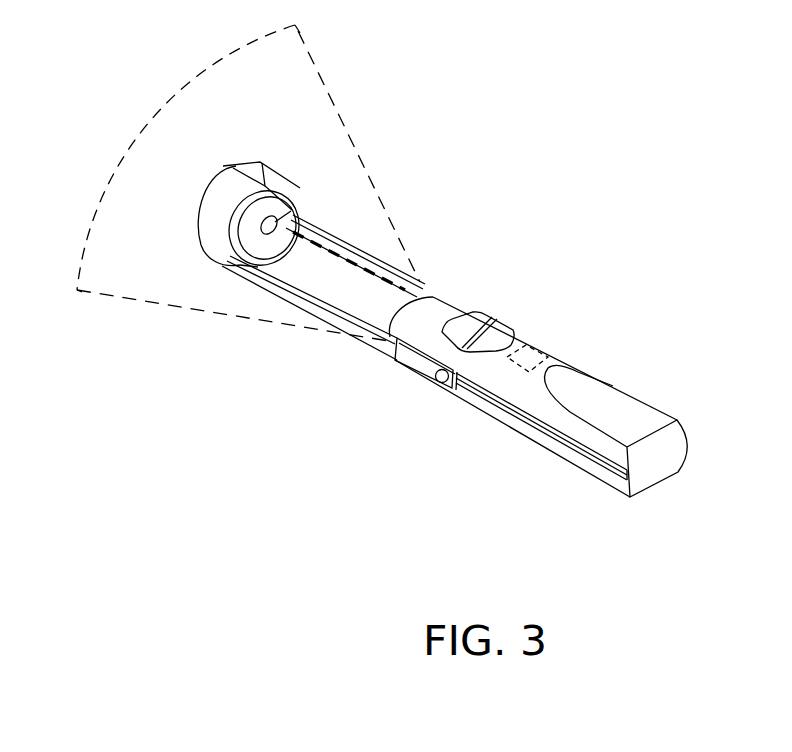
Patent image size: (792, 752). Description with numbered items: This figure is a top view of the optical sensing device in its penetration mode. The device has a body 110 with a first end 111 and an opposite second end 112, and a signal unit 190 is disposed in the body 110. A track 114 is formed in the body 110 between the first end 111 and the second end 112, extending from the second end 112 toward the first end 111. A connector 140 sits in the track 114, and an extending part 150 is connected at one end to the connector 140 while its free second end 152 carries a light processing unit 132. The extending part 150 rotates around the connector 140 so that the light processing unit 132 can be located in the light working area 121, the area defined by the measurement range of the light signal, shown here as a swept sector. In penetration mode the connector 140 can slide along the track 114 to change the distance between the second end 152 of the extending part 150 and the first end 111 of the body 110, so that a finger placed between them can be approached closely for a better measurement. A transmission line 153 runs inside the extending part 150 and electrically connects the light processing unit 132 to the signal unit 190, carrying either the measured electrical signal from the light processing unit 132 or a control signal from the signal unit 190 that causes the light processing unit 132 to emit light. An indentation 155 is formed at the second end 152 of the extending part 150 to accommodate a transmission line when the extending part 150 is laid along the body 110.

The body 110 is at (594, 385).
The first end 111 is at (440, 297).
The second end 112 is at (678, 448).
The track 114 is at (540, 430).
The light working area 121 is at (322, 63).
The light processing unit 132 is at (291, 211).
The connector 140 is at (443, 383).
The extending part 150 is at (328, 310).
The second end 152 is at (214, 228).
The transmission line 153 is at (380, 275).
The indentation 155 is at (232, 166).
The signal unit 190 is at (545, 350).